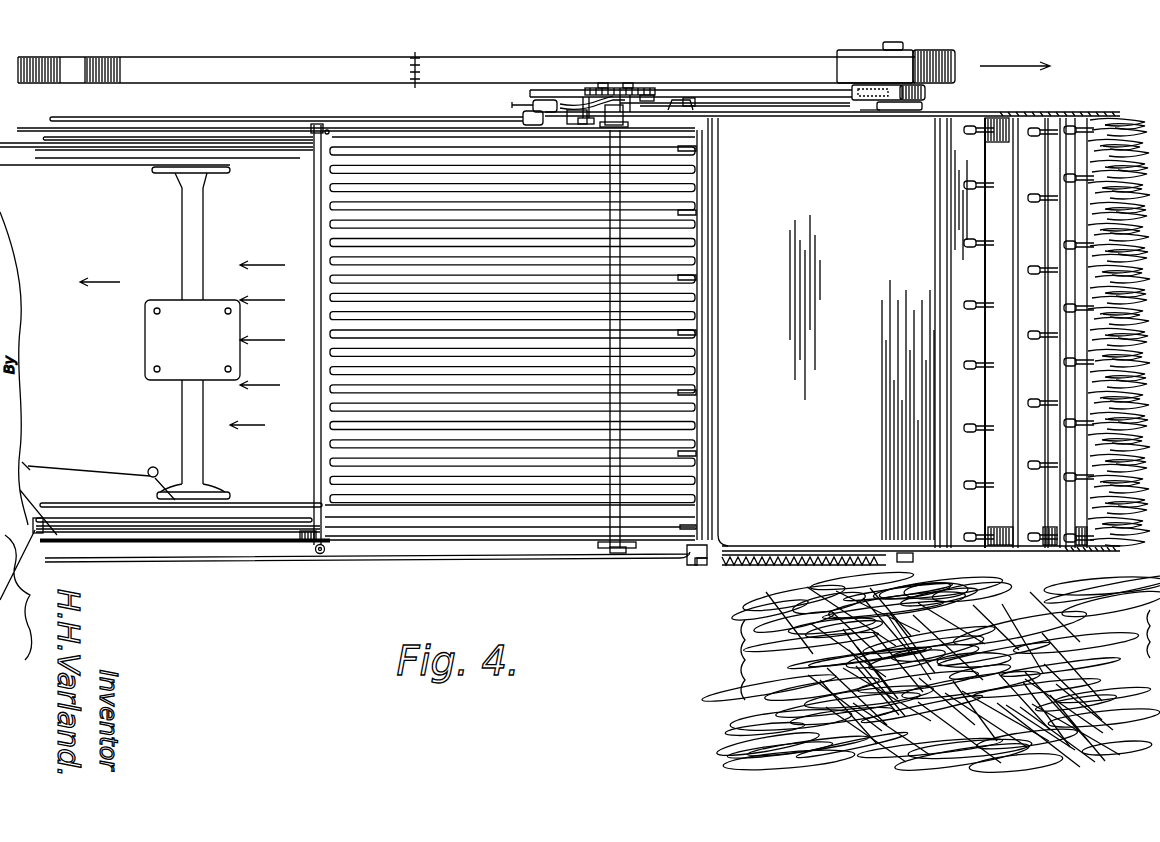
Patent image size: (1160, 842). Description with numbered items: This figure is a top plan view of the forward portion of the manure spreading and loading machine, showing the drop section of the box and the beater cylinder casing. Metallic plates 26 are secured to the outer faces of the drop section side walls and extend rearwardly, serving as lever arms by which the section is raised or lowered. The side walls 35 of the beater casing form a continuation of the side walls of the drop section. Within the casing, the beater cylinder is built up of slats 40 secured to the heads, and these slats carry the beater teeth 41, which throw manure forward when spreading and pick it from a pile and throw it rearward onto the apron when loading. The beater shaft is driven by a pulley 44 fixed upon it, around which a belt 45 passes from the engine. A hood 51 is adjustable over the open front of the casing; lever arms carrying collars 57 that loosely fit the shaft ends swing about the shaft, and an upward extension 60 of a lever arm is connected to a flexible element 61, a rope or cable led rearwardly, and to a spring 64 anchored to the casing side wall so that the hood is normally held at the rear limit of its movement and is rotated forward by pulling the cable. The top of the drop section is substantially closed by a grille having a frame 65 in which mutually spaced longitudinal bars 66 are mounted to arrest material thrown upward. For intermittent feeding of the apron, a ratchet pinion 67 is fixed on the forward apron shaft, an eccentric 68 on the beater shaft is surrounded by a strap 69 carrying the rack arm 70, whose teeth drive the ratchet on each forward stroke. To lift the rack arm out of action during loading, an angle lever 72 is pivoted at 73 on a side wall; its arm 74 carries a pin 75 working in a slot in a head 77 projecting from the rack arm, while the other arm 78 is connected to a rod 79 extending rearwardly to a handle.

The metallic plates 26 is at (217, 548).
The side walls of the casing 35 is at (980, 114).
The slats 40 is at (968, 160).
The beater teeth 41 is at (968, 246).
The pulley 44 is at (998, 528).
The belt 45 is at (463, 66).
The hood 51 is at (878, 333).
The collars 57 is at (903, 548).
The upward extension 60 is at (693, 566).
The flexible element 61 is at (395, 561).
The spring 64 is at (775, 566).
The grille frame 65 is at (314, 480).
The bars 66 is at (546, 485).
The ratchet pinion 67 is at (617, 88).
The eccentric 68 is at (932, 52).
The strap 69 is at (930, 95).
The rack arm 70 is at (745, 90).
The angle lever 72 is at (586, 96).
The pivot 73 is at (622, 555).
The arm of the angle lever 74 is at (598, 98).
The pin 75 is at (647, 112).
The head 77 is at (648, 95).
The other arm of the angle lever 78 is at (558, 104).
The rod 79 is at (450, 117).